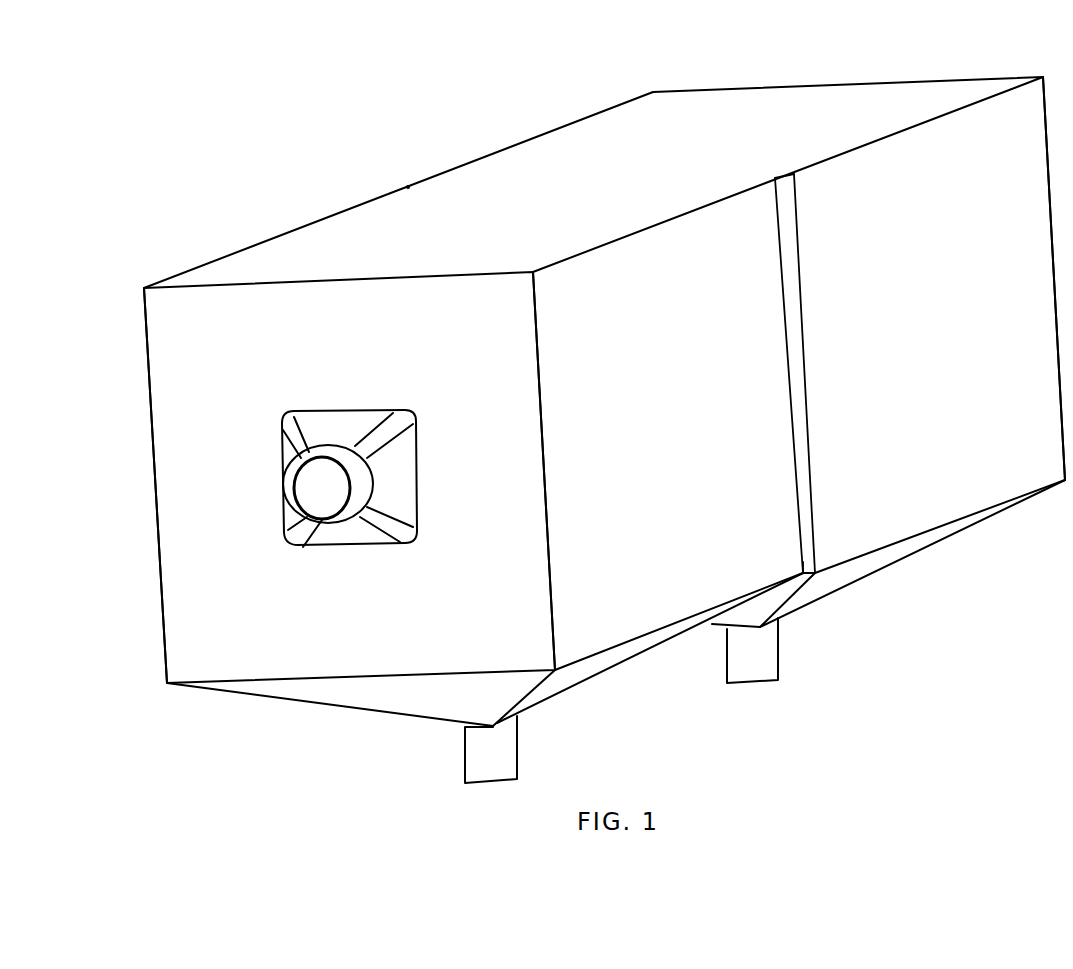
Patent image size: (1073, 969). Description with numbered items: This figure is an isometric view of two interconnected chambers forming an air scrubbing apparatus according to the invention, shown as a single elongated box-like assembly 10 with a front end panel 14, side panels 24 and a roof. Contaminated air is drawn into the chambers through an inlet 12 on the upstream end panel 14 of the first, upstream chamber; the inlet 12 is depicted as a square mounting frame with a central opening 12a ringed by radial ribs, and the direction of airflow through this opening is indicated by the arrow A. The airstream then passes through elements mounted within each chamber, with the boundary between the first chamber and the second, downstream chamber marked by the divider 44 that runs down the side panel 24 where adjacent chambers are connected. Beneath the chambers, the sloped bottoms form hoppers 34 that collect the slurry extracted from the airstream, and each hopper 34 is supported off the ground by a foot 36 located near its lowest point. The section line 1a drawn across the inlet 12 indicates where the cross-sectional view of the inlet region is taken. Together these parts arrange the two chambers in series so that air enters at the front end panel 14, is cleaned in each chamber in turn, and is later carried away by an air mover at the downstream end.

The bulk material container 10 is at (490, 151).
The discharge outlet assembly 12 is at (308, 452).
The discharge opening 12a is at (333, 521).
The front wall 14 is at (491, 615).
The side wall 24 is at (684, 490).
The sloped bottom skid 34 is at (322, 707).
The support foot 36 is at (518, 757).
The divider partition 44 is at (810, 453).
The axis indicator A is at (284, 523).
The section line of FIG. 1a is at (329, 508).